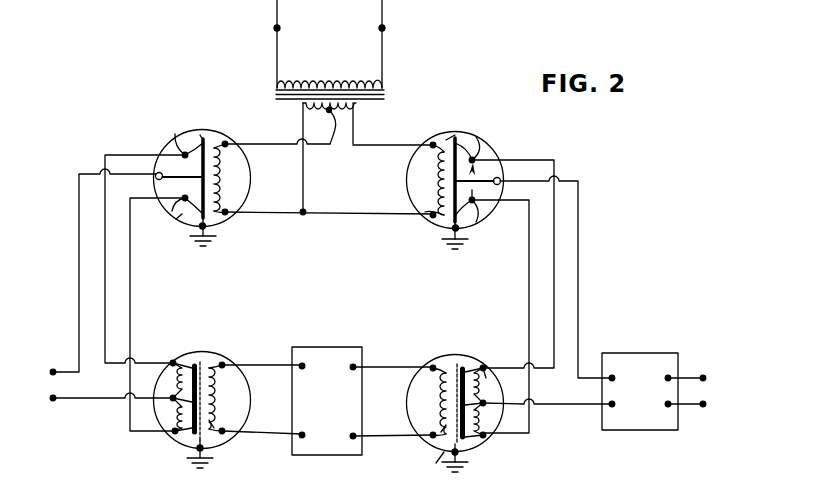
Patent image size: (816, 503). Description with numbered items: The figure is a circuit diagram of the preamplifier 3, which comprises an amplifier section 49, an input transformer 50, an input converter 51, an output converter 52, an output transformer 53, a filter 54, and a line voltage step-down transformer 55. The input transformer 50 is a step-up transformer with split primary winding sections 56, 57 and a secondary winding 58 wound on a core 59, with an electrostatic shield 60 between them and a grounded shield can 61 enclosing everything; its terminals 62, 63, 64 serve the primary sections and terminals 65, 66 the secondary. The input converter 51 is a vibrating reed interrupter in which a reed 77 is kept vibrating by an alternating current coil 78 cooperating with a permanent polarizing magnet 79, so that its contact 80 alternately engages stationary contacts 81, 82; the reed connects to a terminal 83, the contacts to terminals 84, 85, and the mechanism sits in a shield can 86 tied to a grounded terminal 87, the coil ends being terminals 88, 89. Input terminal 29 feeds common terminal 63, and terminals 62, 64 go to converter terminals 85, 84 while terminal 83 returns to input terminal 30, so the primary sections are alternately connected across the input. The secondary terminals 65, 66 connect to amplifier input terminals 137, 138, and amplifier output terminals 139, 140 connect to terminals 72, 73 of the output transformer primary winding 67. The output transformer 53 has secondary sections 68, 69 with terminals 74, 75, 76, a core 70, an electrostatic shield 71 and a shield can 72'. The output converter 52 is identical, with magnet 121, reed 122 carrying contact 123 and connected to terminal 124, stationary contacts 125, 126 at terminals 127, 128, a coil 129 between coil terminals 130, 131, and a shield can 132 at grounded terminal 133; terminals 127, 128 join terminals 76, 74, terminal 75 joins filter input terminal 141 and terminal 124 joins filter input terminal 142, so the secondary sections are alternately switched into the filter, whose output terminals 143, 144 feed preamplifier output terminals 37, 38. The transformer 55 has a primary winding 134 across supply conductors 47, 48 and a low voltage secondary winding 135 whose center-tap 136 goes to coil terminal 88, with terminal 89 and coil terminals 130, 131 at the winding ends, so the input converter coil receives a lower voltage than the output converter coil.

The preamplifier 3 is at (107, 50).
The input terminal 29 is at (50, 400).
The input terminal 30 is at (54, 370).
The preamplifier output terminal 37 is at (703, 378).
The preamplifier output terminal 38 is at (703, 405).
The branch supply conductor 47 is at (280, 27).
The branch supply conductor 48 is at (377, 26).
The amplifier section 49 is at (314, 348).
The input transformer 50 is at (237, 326).
The input converter 51 is at (205, 112).
The output converter 52 is at (476, 126).
The output transformer 53 is at (415, 328).
The filter 54 is at (633, 353).
The line voltage step-down transformer 55 is at (394, 95).
The primary winding section 56 is at (190, 357).
The primary winding section 57 is at (180, 412).
The secondary winding 58 is at (216, 420).
The transformer core 59 is at (198, 359).
The electrostatic shield 60 is at (205, 444).
The shield can 61 is at (222, 355).
The terminal 62 is at (171, 361).
The terminal 63 is at (156, 385).
The terminal 64 is at (156, 427).
The terminal 65 is at (219, 382).
The terminal 66 is at (235, 428).
The primary winding 67 is at (440, 420).
The secondary winding section 68 is at (475, 358).
The secondary winding section 69 is at (474, 406).
The core 70 is at (462, 364).
The electrostatic shield 71 is at (451, 359).
The terminal 72 is at (431, 403).
The shield can 72' is at (432, 463).
The terminal 73 is at (430, 437).
The terminal 74 is at (496, 377).
The terminal 75 is at (496, 408).
The terminal 76 is at (485, 440).
The reed 77 is at (154, 187).
The electromagnetic coil 78 is at (221, 175).
The permanent polarizing magnet 79 is at (205, 139).
The contact 80 is at (200, 134).
The stationary contact 81 is at (168, 208).
The stationary contact 82 is at (152, 153).
The terminal 83 is at (154, 171).
The terminal 84 is at (176, 219).
The terminal 85 is at (175, 136).
The shield can 86 is at (232, 143).
The grounded terminal 87 is at (213, 226).
The coil terminal 88 is at (239, 153).
The coil terminal 89 is at (240, 210).
The permanent magnet 121 is at (446, 140).
The reed 122 is at (501, 179).
The contact 123 is at (476, 140).
The terminal 124 is at (500, 188).
The stationary contact 125 is at (478, 223).
The stationary contact 126 is at (480, 135).
The terminal 127 is at (488, 204).
The terminal 128 is at (488, 159).
The coil 129 is at (442, 183).
The coil terminal 130 is at (419, 157).
The coil terminal 131 is at (423, 212).
The shield can 132 is at (429, 218).
The grounded terminal 133 is at (449, 235).
The line voltage primary winding 134 is at (325, 81).
The low voltage secondary winding 135 is at (304, 116).
The center-tap 136 is at (330, 143).
The input terminal 137 is at (302, 371).
The input terminal 138 is at (304, 437).
The output terminal 139 is at (348, 368).
The output terminal 140 is at (354, 436).
The input terminal 141 is at (612, 404).
The input terminal 142 is at (612, 378).
The output terminal 143 is at (666, 378).
The output terminal 144 is at (666, 404).